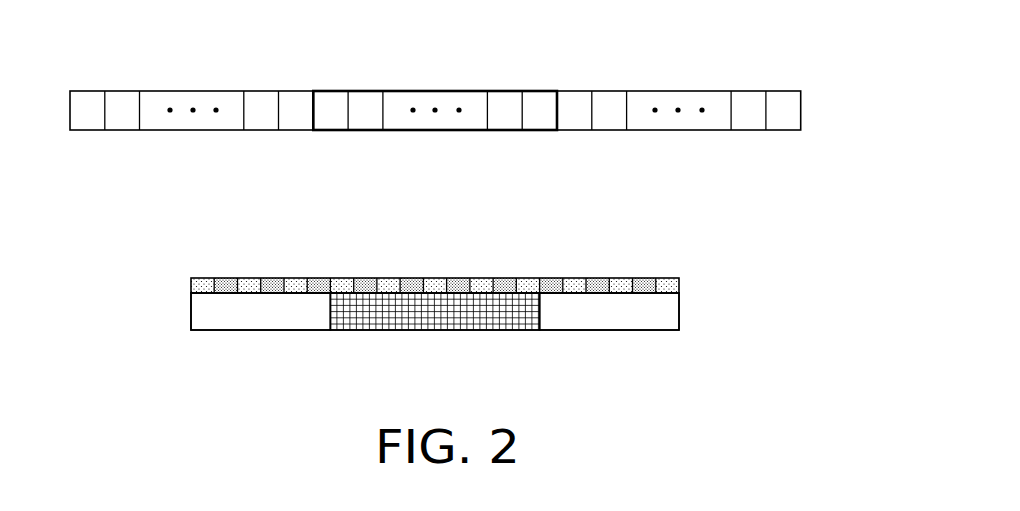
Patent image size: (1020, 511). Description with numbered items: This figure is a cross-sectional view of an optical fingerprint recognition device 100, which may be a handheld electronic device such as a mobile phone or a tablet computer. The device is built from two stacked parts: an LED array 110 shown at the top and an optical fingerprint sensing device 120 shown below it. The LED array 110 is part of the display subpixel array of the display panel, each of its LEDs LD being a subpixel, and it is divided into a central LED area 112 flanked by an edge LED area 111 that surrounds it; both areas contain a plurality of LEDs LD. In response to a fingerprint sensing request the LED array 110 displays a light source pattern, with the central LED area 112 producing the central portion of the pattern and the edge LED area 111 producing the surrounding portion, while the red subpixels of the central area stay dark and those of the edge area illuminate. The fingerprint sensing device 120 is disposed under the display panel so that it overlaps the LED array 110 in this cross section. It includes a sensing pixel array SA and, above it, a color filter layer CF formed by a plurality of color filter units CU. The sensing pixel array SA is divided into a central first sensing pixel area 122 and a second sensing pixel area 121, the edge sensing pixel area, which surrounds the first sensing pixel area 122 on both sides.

The fingerprint recognition device 100 is at (846, 398).
The LED array 110 is at (487, 110).
The edge LED area 111 is at (312, 136).
The central LED area 112 is at (557, 86).
The LEDs LD is at (86, 100).
The optical fingerprint sensing device 120 is at (545, 302).
The second sensing pixel area 121 is at (329, 337).
The first sensing pixel area 122 is at (538, 337).
The color filter units CU is at (201, 285).
The color filter layer CF is at (682, 285).
The sensing pixel array SA is at (682, 311).